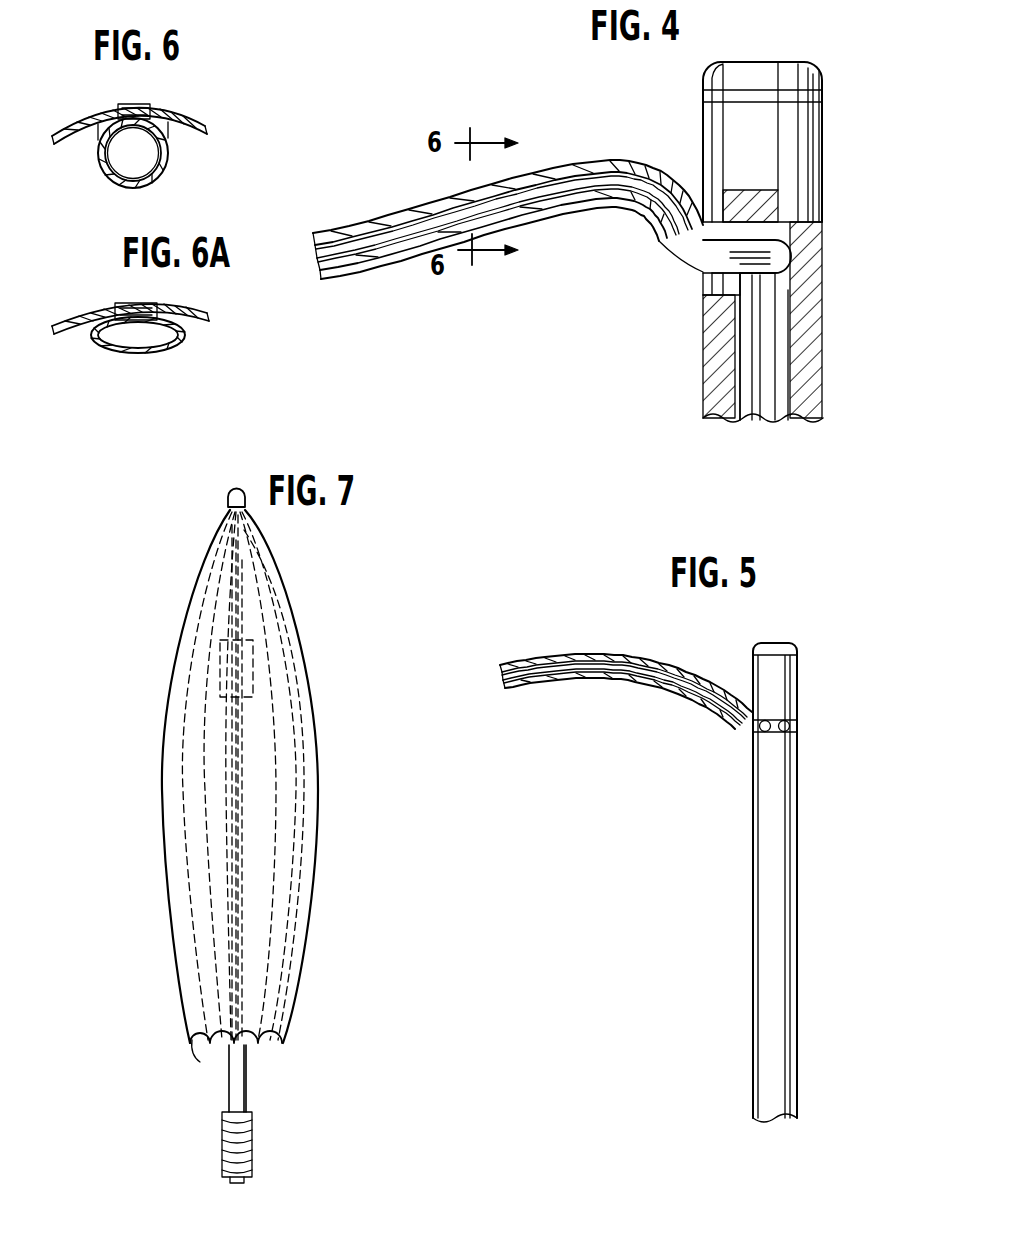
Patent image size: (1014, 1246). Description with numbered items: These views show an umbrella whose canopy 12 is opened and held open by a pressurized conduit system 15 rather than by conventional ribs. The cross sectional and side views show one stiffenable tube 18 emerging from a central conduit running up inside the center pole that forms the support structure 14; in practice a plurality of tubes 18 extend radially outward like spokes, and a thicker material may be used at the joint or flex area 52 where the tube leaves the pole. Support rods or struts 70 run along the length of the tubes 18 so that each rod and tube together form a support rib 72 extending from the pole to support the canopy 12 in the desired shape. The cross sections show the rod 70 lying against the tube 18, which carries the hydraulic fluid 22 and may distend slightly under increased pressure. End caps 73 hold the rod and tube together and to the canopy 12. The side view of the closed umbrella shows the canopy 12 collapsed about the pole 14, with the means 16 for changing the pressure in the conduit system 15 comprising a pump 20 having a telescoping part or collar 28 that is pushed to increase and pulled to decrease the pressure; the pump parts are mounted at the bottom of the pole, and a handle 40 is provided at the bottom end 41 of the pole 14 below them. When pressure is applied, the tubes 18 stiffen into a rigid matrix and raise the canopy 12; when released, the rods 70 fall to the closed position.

In FIG. 6, the canopy 12 is at (58, 127).
In FIG. 6A, the canopy 12 is at (72, 313).
In FIG. 4, the canopy 12 is at (605, 165).
In FIG. 5, the canopy 12 is at (693, 668).
In FIG. 7, the canopy 12 is at (307, 693).
In FIG. 4, the support structure 14 is at (807, 155).
In FIG. 5, the support structure 14 is at (760, 897).
In FIG. 7, the support structure 14 is at (230, 857).
In FIG. 4, the conduit system 15 is at (767, 260).
In FIG. 7, the conduit system 15 is at (283, 802).
In FIG. 7, the means for changing the pressure 16 is at (257, 650).
In FIG. 6, the stiffenable tubes 18 is at (157, 157).
In FIG. 6A, the stiffenable tubes 18 is at (165, 335).
In FIG. 4, the stiffenable tubes 18 is at (683, 230).
In FIG. 5, the stiffenable tubes 18 is at (560, 673).
In FIG. 7, the stiffenable tubes 18 is at (287, 878).
In FIG. 7, the hydraulic pump 20 is at (187, 643).
In FIG. 6, the hydraulic fluid 22 is at (120, 160).
In FIG. 4, the hydraulic fluid 22 is at (520, 197).
In FIG. 7, the telescoping part or collar 28 is at (215, 680).
In FIG. 7, the handle 40 is at (245, 1135).
In FIG. 7, the bottom end 41 is at (243, 1180).
In FIG. 4, the joint or flex area 52 is at (712, 270).
In FIG. 5, the joint or flex area 52 is at (748, 733).
In FIG. 6, the support rods or struts 70 is at (147, 108).
In FIG. 6A, the support rods or struts 70 is at (147, 303).
In FIG. 4, the support rods or struts 70 is at (542, 168).
In FIG. 5, the support rods or struts 70 is at (545, 663).
In FIG. 6, the support ribs 72 is at (123, 108).
In FIG. 6A, the support ribs 72 is at (120, 303).
In FIG. 4, the support ribs 72 is at (618, 205).
In FIG. 5, the support ribs 72 is at (680, 692).
In FIG. 7, the end caps 73 is at (193, 1050).